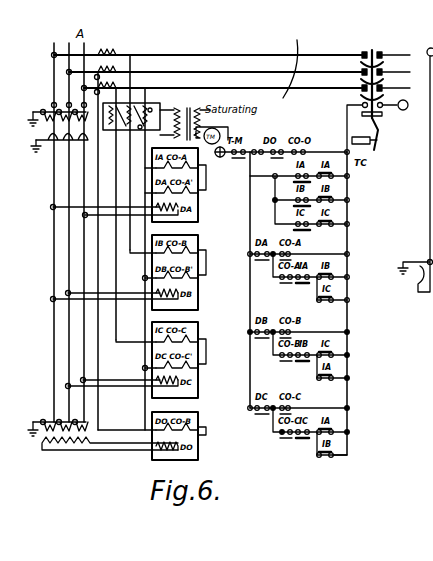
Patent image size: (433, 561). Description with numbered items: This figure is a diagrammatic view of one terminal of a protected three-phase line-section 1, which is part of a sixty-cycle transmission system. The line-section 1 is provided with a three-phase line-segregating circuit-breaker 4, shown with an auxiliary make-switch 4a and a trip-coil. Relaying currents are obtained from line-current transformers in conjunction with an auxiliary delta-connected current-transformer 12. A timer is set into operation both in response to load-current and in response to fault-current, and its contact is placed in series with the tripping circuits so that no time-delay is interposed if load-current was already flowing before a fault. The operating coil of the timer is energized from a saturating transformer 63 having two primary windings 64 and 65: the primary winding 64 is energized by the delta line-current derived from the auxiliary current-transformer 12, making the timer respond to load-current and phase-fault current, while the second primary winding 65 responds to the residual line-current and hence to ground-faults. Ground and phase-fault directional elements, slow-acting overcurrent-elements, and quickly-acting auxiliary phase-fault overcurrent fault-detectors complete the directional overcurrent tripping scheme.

The protected three-phase line-section 1 is at (291, 66).
The three-phase line-segregating circuit-breaker 4 is at (385, 93).
The auxiliary make-switch 4a is at (382, 111).
The auxiliary current-transformer 12 is at (110, 109).
The saturating transformer 63 is at (190, 112).
The primary winding 64 is at (194, 117).
The second primary winding 65 is at (167, 123).